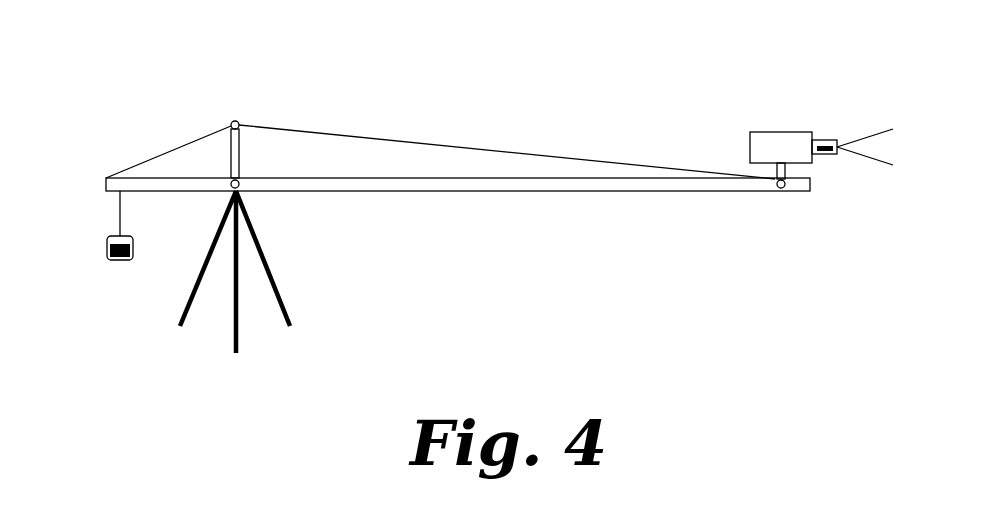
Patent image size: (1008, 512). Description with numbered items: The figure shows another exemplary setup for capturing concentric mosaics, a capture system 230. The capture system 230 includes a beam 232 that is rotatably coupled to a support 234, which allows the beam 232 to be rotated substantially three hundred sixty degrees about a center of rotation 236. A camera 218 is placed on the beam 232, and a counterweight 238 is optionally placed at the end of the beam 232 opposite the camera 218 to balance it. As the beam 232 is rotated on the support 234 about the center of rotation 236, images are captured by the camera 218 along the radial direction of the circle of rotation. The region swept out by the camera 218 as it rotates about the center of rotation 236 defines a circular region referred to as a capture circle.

The capture system 230 is at (375, 68).
The camera 218 is at (755, 140).
The beam 232 is at (553, 183).
The support 234 is at (282, 298).
The center of rotation 236 is at (240, 193).
The counterweight 238 is at (108, 237).